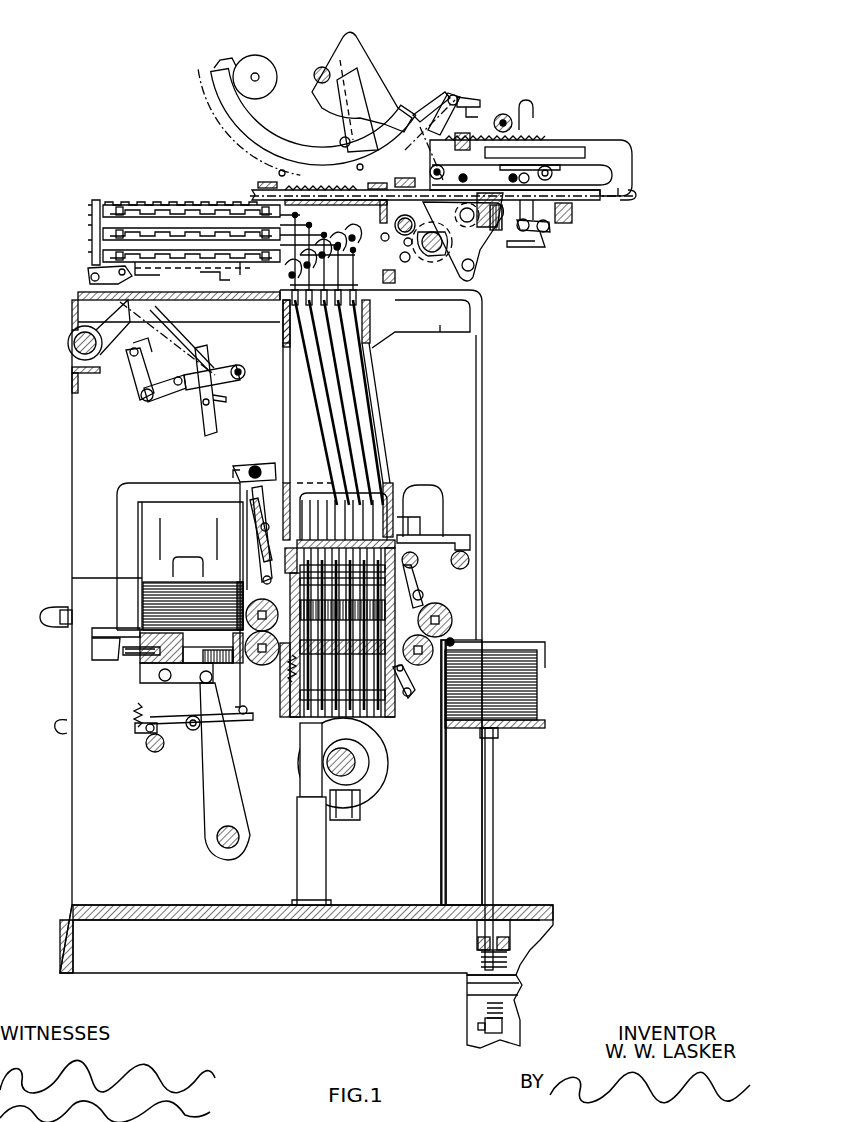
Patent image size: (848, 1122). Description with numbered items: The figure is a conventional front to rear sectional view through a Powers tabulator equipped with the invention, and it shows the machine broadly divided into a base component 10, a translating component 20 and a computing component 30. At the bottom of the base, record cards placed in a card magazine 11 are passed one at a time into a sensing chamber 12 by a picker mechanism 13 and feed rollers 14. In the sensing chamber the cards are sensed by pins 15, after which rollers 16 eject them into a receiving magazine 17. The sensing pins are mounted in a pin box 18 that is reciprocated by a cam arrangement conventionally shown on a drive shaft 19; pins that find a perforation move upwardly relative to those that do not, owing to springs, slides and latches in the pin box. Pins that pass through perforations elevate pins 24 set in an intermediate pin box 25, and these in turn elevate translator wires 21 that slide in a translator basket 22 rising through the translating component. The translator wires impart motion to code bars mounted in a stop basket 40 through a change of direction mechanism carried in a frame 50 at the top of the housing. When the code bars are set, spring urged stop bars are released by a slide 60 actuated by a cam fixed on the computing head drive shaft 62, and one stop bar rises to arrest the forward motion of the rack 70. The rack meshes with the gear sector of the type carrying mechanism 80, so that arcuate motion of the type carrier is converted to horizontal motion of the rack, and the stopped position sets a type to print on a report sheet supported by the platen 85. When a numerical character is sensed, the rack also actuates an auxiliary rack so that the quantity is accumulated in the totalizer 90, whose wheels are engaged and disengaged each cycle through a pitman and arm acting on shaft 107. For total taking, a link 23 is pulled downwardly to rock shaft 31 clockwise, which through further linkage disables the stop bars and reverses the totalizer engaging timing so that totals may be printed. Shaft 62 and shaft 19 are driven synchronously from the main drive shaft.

The base component 10 is at (684, 769).
The card magazine 11 is at (143, 603).
The sensing chamber 12 is at (285, 656).
The picker mechanism 13 is at (143, 668).
The feed rollers 14 is at (267, 664).
The sensing pins 15 is at (410, 662).
The rollers 16 is at (444, 608).
The receiving magazine 17 is at (523, 728).
The pin box 18 is at (390, 702).
The drive shaft 19 is at (350, 773).
The translating component 20 is at (685, 460).
The translator wires 21 is at (352, 435).
The translator basket 22 is at (383, 433).
The link 23 is at (203, 423).
The pins 24 is at (383, 527).
The intermediate pin box 25 is at (416, 580).
The computing component 30 is at (691, 243).
The shaft 31 is at (86, 276).
The stop basket 40 is at (168, 197).
The frame 50 is at (280, 285).
The slide 60 is at (402, 252).
The computing head drive shaft 62 is at (430, 255).
The rack 70 is at (253, 190).
The type carrying mechanism 80 is at (303, 140).
The platen 85 is at (263, 65).
The totalizer 90 is at (520, 80).
The shaft 107 is at (550, 230).